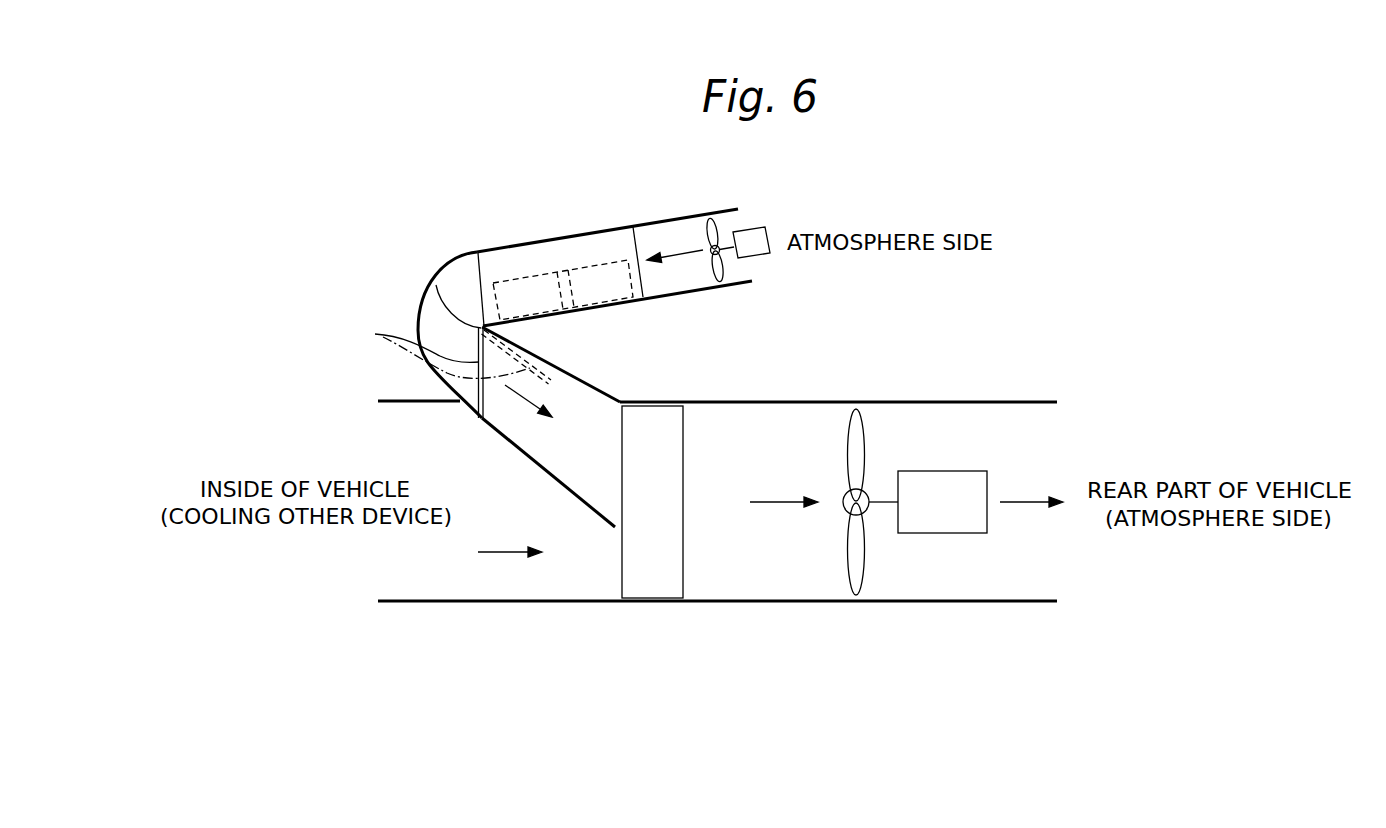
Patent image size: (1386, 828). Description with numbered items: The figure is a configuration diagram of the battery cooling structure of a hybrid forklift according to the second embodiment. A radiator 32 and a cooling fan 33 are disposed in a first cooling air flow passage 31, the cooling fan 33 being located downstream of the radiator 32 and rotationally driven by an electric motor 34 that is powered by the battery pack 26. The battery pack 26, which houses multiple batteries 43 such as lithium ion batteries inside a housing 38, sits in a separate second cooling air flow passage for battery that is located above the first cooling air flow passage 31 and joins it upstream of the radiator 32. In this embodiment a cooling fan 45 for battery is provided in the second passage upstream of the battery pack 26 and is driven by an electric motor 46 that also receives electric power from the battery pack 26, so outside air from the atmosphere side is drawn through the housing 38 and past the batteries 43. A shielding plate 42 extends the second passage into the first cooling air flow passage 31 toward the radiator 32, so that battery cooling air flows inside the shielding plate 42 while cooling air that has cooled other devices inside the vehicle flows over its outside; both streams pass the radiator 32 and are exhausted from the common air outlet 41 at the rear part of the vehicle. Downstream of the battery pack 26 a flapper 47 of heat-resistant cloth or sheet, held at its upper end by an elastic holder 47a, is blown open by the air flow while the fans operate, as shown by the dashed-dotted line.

The battery pack 26 is at (561, 250).
The batteries 43 is at (518, 273).
The housing 38 is at (640, 240).
The cooling fan for battery 45 is at (718, 222).
The electric motor 46 is at (758, 228).
The flapper 47 is at (448, 369).
The holder 47a is at (436, 287).
The shielding plate 42 is at (497, 435).
The air outlet 41 is at (1040, 406).
The first cooling air flow passage 31 is at (772, 402).
The radiator 32 is at (683, 427).
The cooling fan 33 is at (865, 427).
The electric motor 34 is at (943, 471).